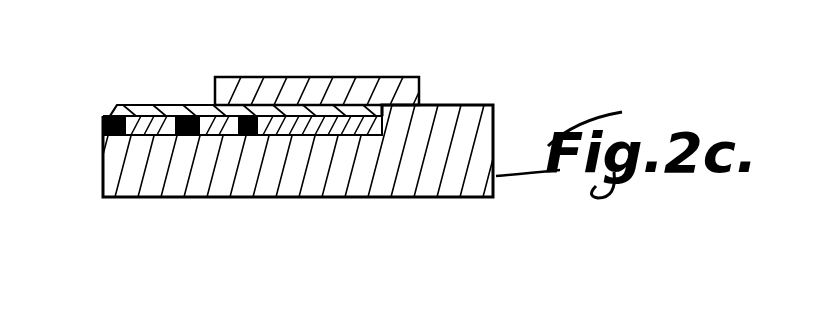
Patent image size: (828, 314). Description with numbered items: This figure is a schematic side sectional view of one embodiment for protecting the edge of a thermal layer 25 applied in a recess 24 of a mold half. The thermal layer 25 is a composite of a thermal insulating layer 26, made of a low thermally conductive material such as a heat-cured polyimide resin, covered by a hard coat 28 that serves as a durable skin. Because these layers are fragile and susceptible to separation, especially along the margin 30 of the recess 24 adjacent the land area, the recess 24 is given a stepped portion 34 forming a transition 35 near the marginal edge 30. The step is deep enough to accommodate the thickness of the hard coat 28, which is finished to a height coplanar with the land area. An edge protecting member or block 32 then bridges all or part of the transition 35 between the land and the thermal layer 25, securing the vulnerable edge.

The recess 24 is at (200, 130).
The thermal layer 25 is at (102, 104).
The thermal insulating layer 26 is at (126, 134).
The hard coat 28 is at (137, 105).
The margin 30 is at (270, 124).
The edge protecting member or block 32 is at (419, 105).
The stepped portion 34 is at (354, 117).
The transition 35 is at (338, 63).